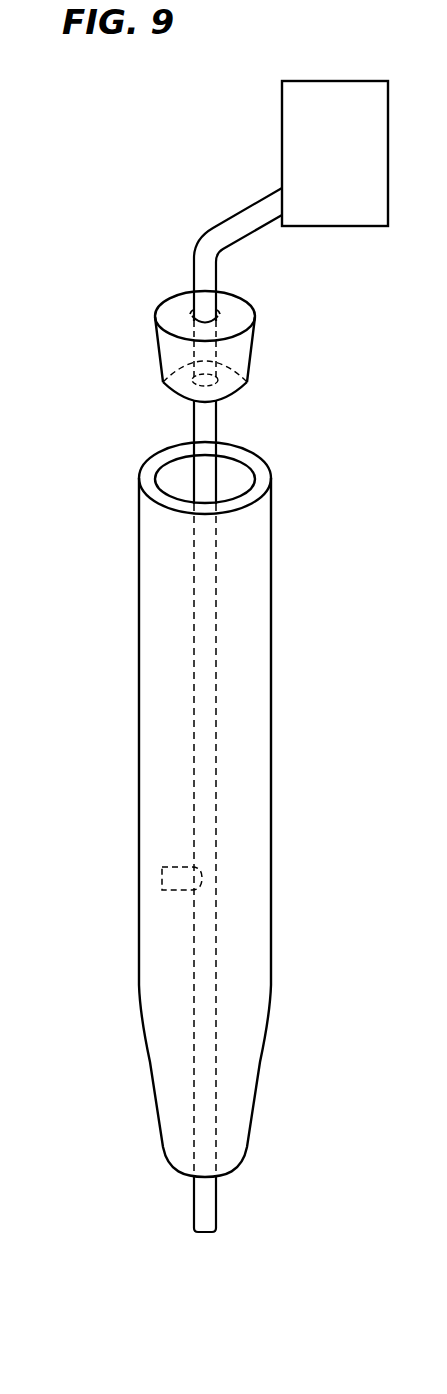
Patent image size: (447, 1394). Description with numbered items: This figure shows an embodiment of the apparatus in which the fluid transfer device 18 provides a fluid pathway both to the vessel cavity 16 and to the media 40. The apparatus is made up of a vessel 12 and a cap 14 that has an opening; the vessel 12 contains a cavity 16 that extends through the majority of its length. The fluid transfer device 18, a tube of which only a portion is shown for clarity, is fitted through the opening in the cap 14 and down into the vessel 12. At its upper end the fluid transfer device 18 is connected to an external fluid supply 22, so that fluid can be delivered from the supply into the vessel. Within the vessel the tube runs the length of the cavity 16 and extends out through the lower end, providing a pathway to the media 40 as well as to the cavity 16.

The vessel 12 is at (258, 545).
The cap 14 is at (175, 350).
The cavity 16 is at (170, 797).
The fluid transfer device 18 is at (240, 222).
The external fluid supply 22 is at (308, 112).
The media 40 is at (202, 1235).